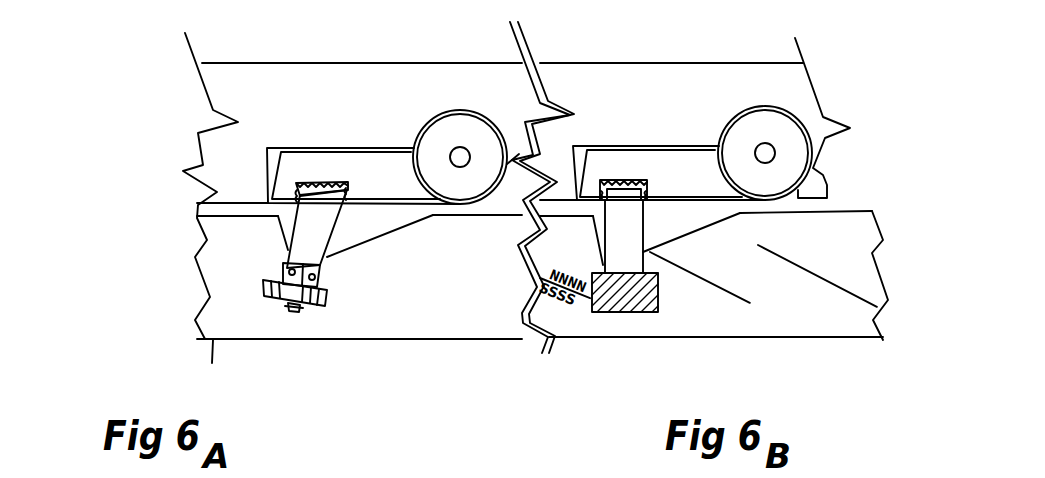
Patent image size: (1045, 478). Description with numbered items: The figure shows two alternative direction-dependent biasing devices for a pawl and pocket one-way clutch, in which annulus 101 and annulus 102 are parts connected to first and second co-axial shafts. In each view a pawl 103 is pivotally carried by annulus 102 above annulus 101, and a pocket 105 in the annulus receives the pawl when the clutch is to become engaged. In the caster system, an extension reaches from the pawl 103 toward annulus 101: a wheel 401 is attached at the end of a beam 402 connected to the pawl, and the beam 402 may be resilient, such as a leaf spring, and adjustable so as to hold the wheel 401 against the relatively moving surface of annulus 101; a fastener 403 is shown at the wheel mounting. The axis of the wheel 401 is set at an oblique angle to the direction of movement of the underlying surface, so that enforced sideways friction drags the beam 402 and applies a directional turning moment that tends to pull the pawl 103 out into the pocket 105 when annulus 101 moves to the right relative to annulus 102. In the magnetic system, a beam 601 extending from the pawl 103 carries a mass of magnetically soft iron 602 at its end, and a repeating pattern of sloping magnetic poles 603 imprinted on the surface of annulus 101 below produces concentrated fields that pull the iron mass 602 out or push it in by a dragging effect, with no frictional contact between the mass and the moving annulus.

In FIG. 6A, the annulus 101 is at (404, 331).
In FIG. 6A, the annulus 102 is at (426, 99).
In FIG. 6A, the pawl 103 is at (417, 189).
In FIG. 6B, the pawl 103 is at (729, 189).
In FIG. 6A, the pocket 105 is at (403, 230).
In FIG. 6A, the wheel 401 is at (319, 289).
In FIG. 6A, the beam 402 is at (332, 230).
In FIG. 6A, the bolt 403 is at (293, 310).
In FIG. 6B, the beam 601 is at (633, 244).
In FIG. 6B, the mass of magnetically soft iron 602 is at (627, 313).
In FIG. 6B, the sloping magnetic poles 603 is at (712, 305).